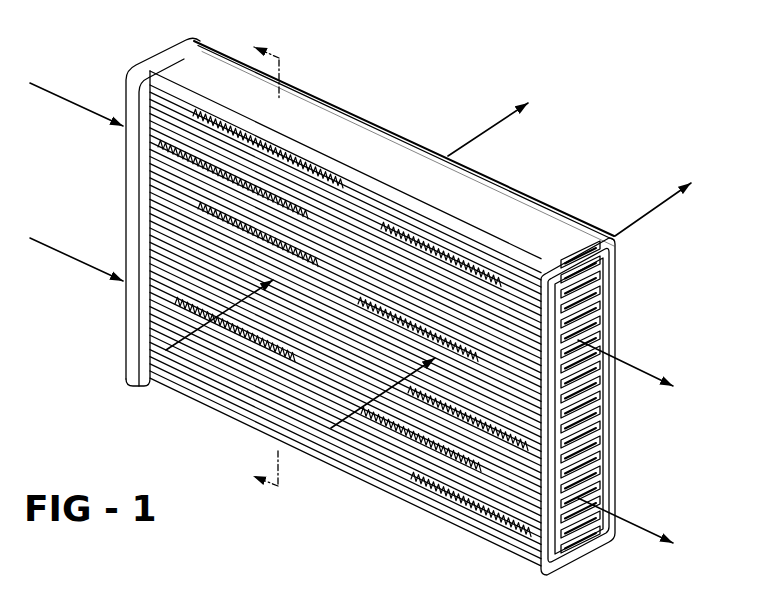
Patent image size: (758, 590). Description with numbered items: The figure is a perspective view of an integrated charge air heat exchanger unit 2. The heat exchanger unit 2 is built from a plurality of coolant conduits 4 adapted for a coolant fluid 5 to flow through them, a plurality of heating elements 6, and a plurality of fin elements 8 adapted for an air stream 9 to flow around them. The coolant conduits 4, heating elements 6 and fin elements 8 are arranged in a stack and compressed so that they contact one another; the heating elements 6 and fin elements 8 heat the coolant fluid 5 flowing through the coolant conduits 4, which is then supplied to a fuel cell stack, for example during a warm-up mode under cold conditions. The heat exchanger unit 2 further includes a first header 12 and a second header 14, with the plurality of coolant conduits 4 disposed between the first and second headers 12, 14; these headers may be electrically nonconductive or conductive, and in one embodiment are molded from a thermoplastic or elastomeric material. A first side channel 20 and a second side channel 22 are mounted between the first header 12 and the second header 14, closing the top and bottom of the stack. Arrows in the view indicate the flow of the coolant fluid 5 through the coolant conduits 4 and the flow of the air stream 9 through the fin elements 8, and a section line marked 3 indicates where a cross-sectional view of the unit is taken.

The integrated charge air heat exchanger unit 2 is at (553, 120).
The section line 3- 3 is at (268, 263).
The coolant conduits 4 is at (588, 273).
The coolant fluid 5 is at (30, 83).
The heating elements 6 is at (490, 468).
The fin elements 8 is at (430, 437).
The air stream 9 is at (160, 342).
The first header 12 is at (604, 229).
The second header 14 is at (117, 92).
The first side channel 20 is at (300, 100).
The second side channel 22 is at (207, 398).